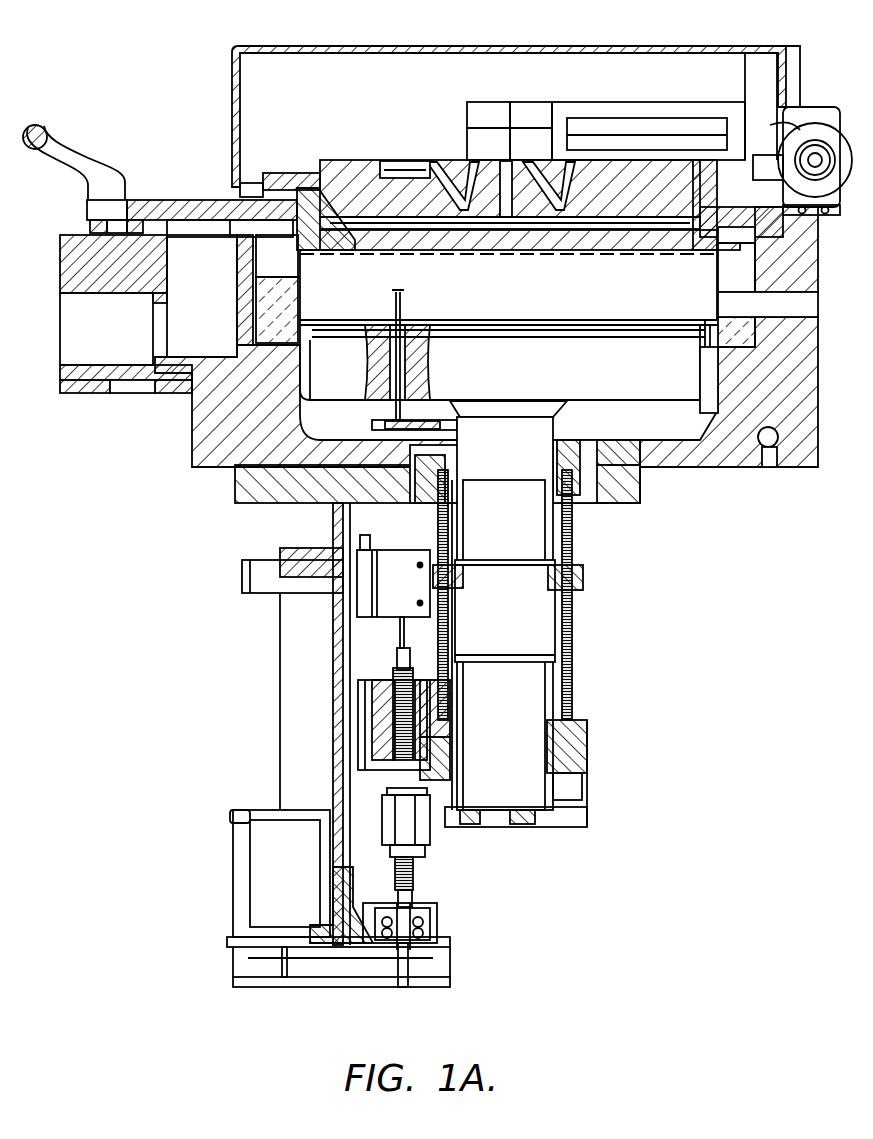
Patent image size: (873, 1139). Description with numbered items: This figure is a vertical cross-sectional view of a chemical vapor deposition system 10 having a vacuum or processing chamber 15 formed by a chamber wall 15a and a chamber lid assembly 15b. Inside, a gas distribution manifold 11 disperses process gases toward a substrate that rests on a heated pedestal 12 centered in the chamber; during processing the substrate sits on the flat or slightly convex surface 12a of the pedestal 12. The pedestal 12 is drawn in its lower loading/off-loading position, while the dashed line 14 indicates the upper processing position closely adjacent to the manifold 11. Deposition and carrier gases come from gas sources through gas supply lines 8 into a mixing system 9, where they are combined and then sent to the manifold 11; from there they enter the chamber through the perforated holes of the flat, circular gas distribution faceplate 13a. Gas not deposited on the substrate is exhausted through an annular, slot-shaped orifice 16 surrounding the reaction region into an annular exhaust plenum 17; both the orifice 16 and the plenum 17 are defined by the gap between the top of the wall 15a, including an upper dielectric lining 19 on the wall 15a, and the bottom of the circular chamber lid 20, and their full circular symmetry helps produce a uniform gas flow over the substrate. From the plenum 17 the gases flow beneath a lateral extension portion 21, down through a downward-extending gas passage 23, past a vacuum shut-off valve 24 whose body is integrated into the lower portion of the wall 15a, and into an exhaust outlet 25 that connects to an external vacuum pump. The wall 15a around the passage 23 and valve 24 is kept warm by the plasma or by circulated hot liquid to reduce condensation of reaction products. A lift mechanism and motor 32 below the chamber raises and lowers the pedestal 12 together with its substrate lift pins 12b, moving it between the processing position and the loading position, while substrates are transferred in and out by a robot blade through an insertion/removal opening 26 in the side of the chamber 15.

The gas supply lines 8 is at (683, 105).
The mixing system 9 is at (497, 110).
The chemical vapor deposition (CVD) system 10 is at (120, 449).
The gas distribution manifold 11 is at (447, 157).
The heated pedestal 12 is at (486, 375).
The surface of pedestal 12a is at (542, 320).
The substrate lift pins 12b is at (399, 300).
The gas distribution faceplate 13a is at (392, 252).
The dashed line (upper processing position) 14 is at (596, 258).
The processing chamber 15 is at (478, 302).
The chamber wall 15a is at (222, 448).
The chamber lid assembly 15b is at (545, 46).
The slot-shaped orifice 16 is at (304, 253).
The annular exhaust plenum 17 is at (287, 270).
The upper dielectric lining 19 is at (290, 300).
The circular chamber lid 20 is at (160, 200).
The lateral extension portion 21 is at (213, 200).
The gas passage 23 is at (206, 310).
The vacuum shut-off valve 24 is at (112, 335).
The exhaust outlet 25 is at (125, 393).
The insertion/removal opening 26 is at (807, 303).
The lift mechanism and motor 32 is at (440, 945).